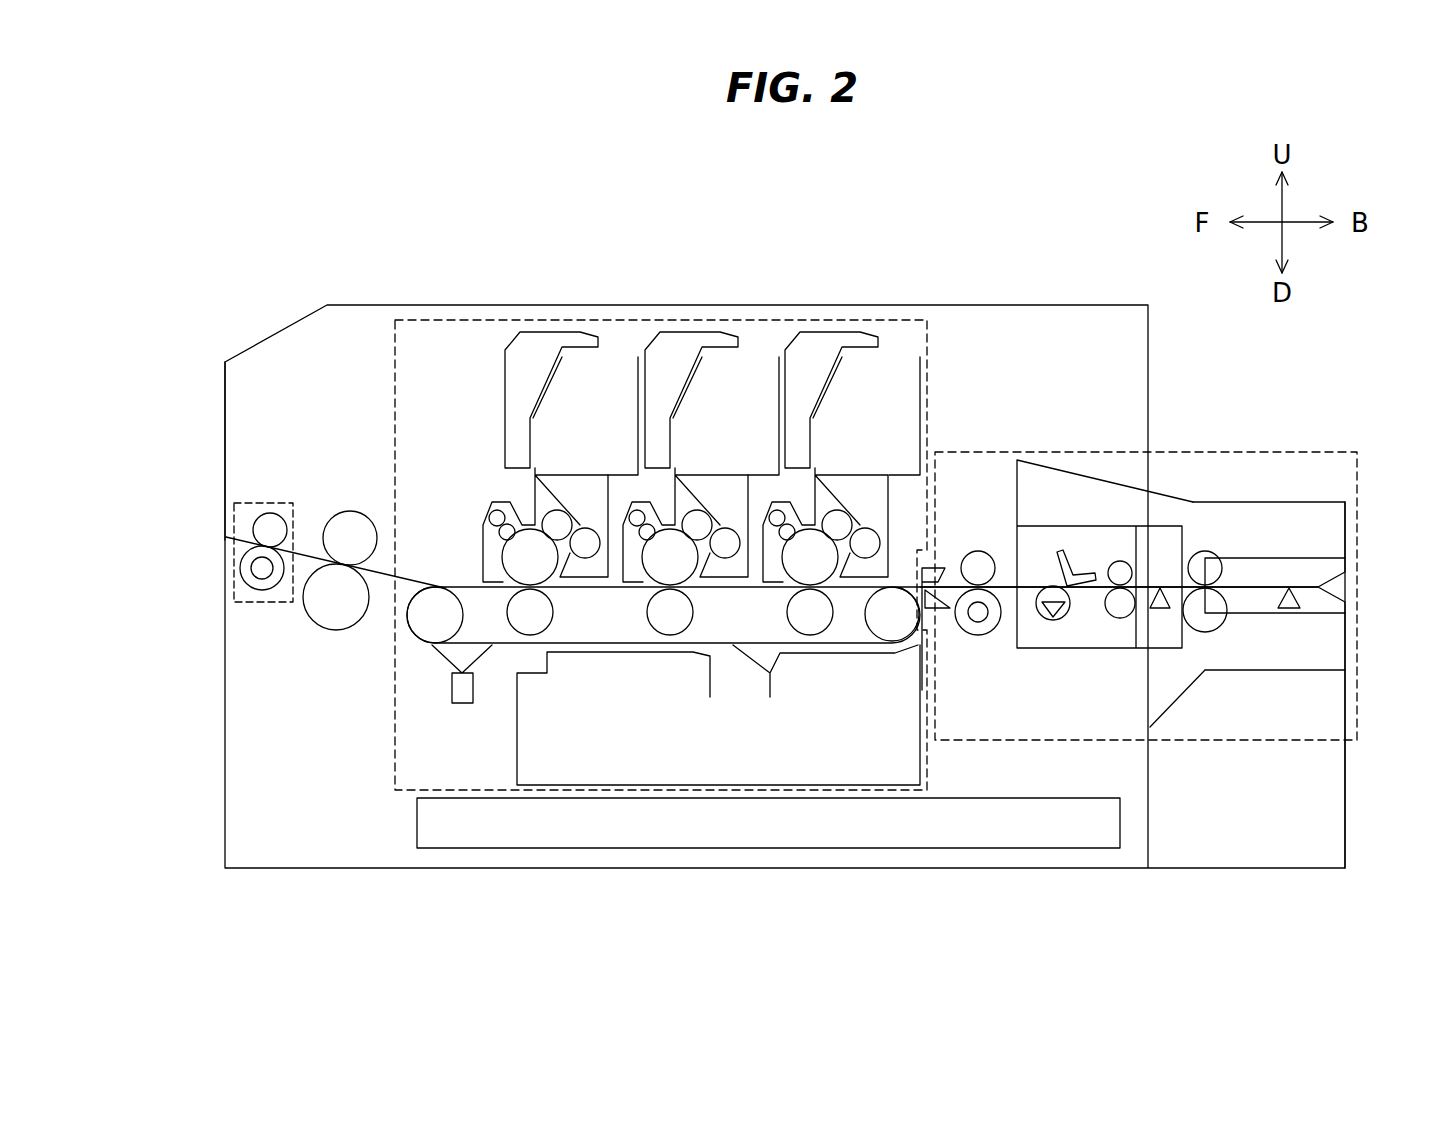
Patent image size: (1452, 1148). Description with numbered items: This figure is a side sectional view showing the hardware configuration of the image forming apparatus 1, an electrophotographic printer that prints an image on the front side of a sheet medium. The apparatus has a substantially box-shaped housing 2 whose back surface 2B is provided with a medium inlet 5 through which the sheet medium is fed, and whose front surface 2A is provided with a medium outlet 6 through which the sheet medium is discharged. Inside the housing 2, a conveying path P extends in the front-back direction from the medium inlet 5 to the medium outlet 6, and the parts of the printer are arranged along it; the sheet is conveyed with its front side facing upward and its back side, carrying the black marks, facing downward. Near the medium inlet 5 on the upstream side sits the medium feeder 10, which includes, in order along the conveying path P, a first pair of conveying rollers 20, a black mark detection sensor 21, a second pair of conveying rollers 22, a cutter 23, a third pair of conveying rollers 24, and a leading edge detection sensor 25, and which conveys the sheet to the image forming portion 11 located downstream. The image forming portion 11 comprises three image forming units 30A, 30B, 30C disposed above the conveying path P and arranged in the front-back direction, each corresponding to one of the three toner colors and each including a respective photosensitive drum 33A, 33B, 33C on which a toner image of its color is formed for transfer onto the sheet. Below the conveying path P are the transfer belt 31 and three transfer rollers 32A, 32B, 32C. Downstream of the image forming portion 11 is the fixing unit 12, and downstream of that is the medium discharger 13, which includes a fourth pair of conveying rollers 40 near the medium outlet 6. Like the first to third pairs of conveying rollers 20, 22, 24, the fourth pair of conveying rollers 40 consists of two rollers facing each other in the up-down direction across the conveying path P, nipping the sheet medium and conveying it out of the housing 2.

The image forming apparatus 1 is at (250, 215).
The housing 2 is at (360, 305).
The front surface 2A is at (224, 388).
The back surface 2B is at (1349, 512).
The medium inlet 5 is at (1349, 590).
The medium outlet 6 is at (222, 537).
The medium feeder 10 is at (1358, 668).
The image forming portion 11 is at (478, 318).
The fixing unit 12 is at (323, 632).
The medium discharger 13 is at (263, 603).
The first pair of conveying rollers 20 is at (1201, 551).
The black mark detection sensor 21 is at (1158, 588).
The second pair of conveying rollers 22 is at (1114, 559).
The cutter 23 is at (1041, 564).
The third pair of conveying rollers 24 is at (966, 551).
The leading edge detection sensor 25 is at (923, 569).
The conveying path P is at (1006, 582).
The image forming unit 30A is at (825, 366).
The image forming unit 30B is at (684, 366).
The image forming unit 30C is at (515, 487).
The transfer belt 31 is at (868, 650).
The transfer roller 32A is at (810, 637).
The transfer roller 32B is at (670, 637).
The transfer roller 32C is at (530, 637).
The photosensitive drum 33A is at (792, 415).
The photosensitive drum 33B is at (654, 415).
The photosensitive drum 33C is at (507, 545).
The fourth pair of conveying rollers 40 is at (265, 511).